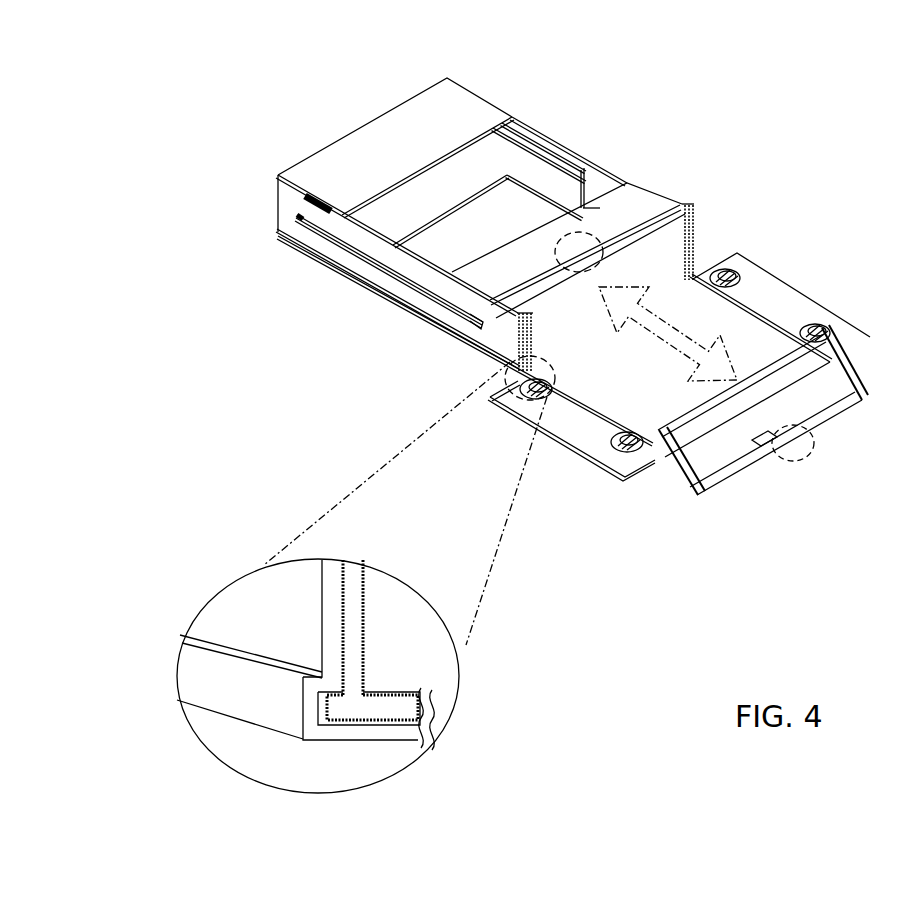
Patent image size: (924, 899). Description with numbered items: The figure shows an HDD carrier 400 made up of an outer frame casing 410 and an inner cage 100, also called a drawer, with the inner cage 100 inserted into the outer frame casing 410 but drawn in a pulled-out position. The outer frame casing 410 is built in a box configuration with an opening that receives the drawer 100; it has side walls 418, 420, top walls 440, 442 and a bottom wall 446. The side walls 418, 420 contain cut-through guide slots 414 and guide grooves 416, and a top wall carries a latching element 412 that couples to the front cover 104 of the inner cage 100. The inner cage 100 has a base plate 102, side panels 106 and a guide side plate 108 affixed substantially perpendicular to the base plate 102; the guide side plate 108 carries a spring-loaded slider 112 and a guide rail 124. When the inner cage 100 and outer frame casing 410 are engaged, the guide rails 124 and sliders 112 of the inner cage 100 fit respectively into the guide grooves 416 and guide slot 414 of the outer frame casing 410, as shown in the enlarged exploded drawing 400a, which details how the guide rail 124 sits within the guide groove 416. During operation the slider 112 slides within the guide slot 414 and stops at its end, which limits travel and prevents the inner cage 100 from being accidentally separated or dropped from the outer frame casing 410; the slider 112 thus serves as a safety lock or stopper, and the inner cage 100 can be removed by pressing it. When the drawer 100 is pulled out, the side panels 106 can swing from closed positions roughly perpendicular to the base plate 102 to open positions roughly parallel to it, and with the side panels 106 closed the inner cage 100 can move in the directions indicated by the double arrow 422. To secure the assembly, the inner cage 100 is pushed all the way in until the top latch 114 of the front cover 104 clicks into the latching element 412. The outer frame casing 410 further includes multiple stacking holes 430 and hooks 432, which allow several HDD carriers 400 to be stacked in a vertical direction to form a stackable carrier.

The inner cage 100 is at (846, 283).
The base plate 102 is at (679, 367).
The front cover 104 is at (700, 463).
The side panels 106 is at (573, 427).
The guide side plate 108 is at (668, 240).
The slider 112 is at (478, 319).
The top latch 114 is at (805, 442).
The guide rail 124 is at (338, 707).
The HDD carrier 400 is at (116, 148).
The exploded drawing 400a is at (192, 624).
The outer frame casing 410 is at (484, 80).
The latching element 412 is at (603, 235).
The guide slot 414 is at (407, 282).
The guide groove 416 is at (560, 212).
The side wall 418 is at (363, 237).
The side wall 420 is at (533, 146).
The double arrow 422 is at (668, 334).
The stacking holes 430 is at (303, 198).
The hooks 432 is at (307, 258).
The top wall 440 is at (396, 155).
The top wall 442 is at (544, 244).
The bottom wall 446 is at (449, 211).